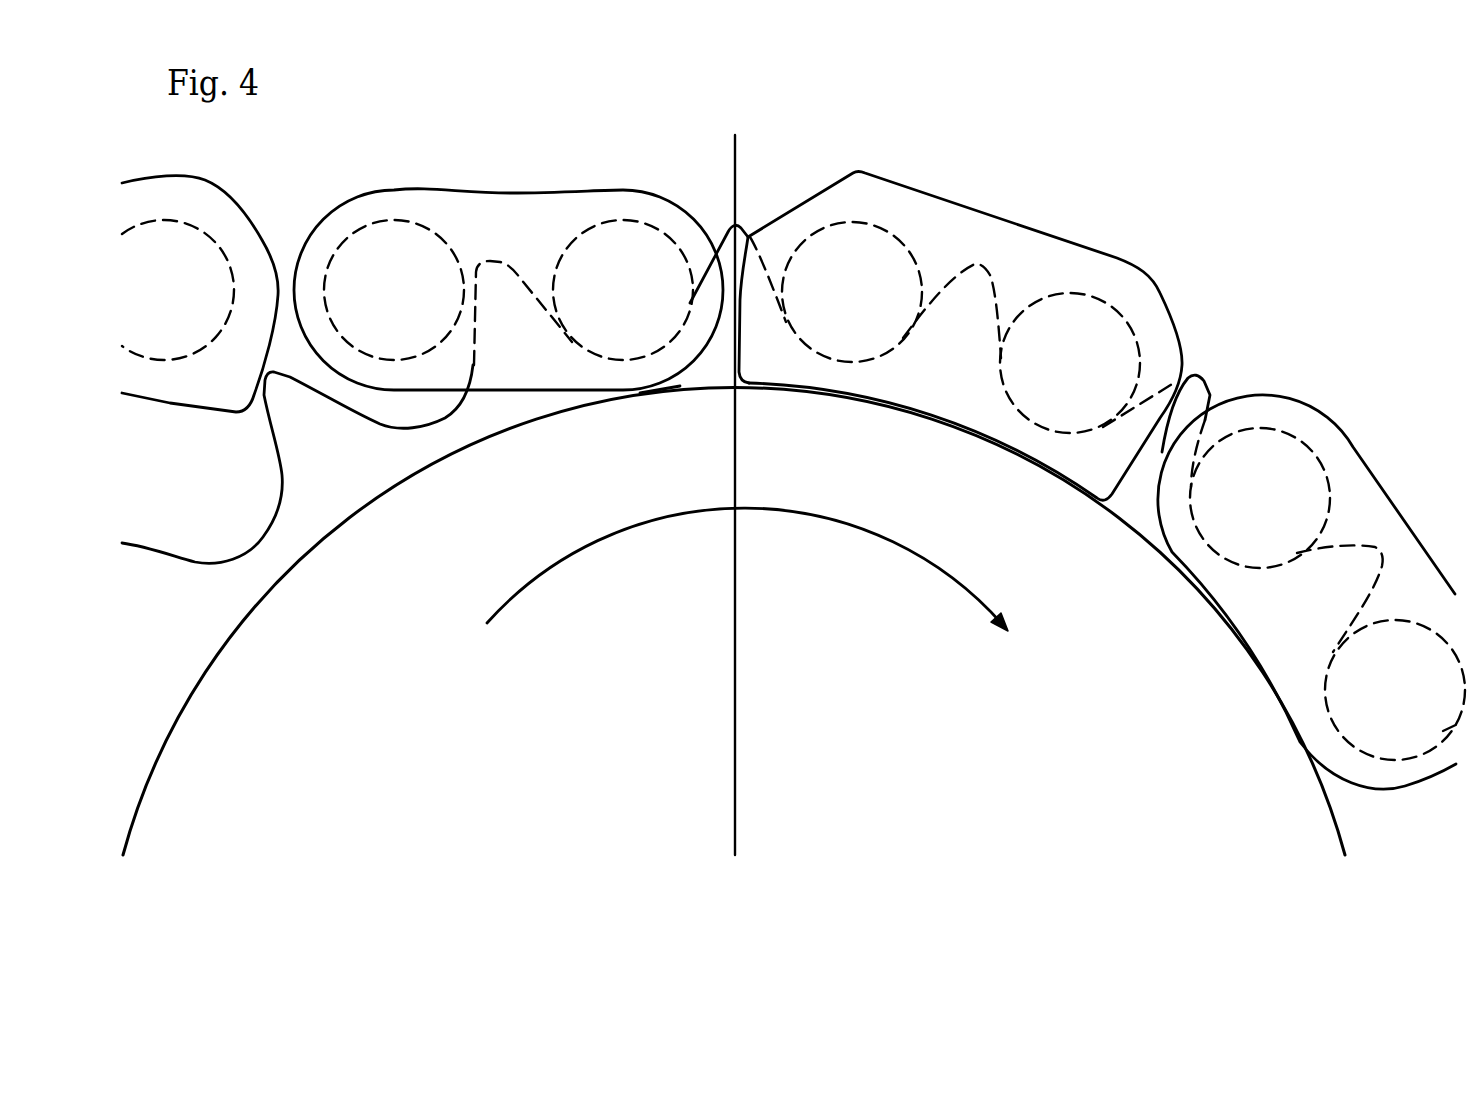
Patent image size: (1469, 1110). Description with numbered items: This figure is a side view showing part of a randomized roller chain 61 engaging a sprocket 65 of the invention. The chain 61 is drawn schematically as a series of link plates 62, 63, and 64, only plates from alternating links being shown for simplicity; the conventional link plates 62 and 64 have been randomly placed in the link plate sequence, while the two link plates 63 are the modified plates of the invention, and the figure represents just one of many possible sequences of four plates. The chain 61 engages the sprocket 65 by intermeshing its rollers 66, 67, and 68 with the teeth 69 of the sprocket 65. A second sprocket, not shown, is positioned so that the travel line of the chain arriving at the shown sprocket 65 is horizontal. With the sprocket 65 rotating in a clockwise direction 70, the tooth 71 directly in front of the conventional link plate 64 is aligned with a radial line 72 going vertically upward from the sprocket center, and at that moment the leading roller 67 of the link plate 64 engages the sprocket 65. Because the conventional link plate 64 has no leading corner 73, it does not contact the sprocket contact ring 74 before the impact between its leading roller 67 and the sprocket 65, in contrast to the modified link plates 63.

The roller chain 61 is at (1193, 187).
The link plate 62 is at (1292, 398).
The link plate 63 is at (220, 187).
The link plate 64 is at (653, 192).
The sprocket 65 is at (733, 489).
The roller 66 is at (868, 295).
The leading roller 67 is at (610, 250).
The roller 68 is at (155, 305).
The tooth 69 is at (267, 383).
The clockwise direction 70 is at (747, 569).
The tooth 71 is at (748, 232).
The radial line 72 is at (757, 495).
The leading corner 73 is at (663, 385).
The sprocket contact ring 74 is at (243, 623).